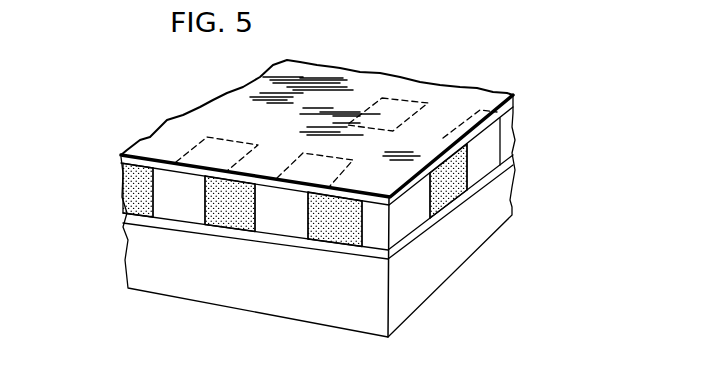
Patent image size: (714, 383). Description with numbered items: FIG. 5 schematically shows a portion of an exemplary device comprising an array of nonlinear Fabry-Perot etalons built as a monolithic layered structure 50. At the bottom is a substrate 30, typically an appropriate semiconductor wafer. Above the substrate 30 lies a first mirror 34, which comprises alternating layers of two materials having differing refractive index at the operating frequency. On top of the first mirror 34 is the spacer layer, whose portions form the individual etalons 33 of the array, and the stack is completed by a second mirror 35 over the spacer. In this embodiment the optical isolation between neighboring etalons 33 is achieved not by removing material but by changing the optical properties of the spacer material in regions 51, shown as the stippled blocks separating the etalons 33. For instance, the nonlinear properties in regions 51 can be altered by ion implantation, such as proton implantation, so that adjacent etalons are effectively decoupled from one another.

The composite structure 50 is at (147, 88).
The substrate 30 is at (505, 207).
The spacer 33 is at (183, 210).
The first mirror 34 is at (128, 216).
The second mirror 35 is at (122, 164).
The regions 51 is at (122, 200).